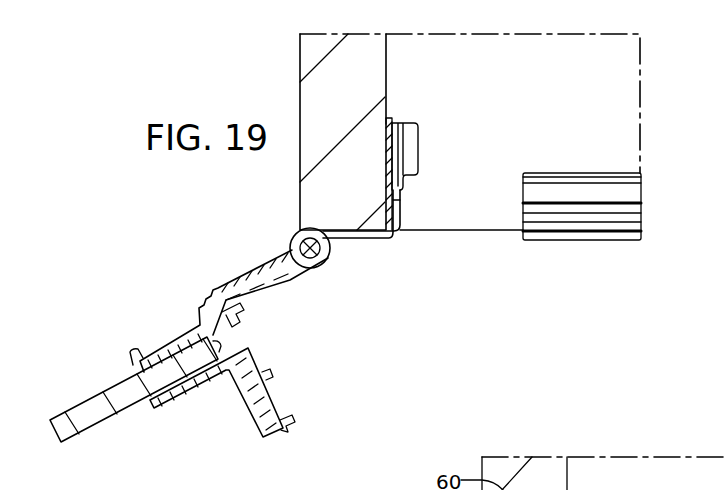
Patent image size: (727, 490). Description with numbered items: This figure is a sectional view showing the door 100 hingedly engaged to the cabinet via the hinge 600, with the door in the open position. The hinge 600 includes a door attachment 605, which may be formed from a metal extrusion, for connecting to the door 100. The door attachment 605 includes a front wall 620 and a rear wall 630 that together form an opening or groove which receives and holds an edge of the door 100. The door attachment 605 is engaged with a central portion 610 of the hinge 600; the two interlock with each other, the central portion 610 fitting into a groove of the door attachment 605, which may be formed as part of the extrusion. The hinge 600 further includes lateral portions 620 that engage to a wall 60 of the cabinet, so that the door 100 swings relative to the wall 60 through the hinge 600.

The wall 60 is at (338, 84).
The door 100 is at (118, 402).
The hinge 600 is at (300, 233).
The door attachment 605 is at (234, 284).
The central portion 610 is at (297, 283).
The lateral portion 620 is at (405, 153).
The rear wall 630 is at (190, 377).